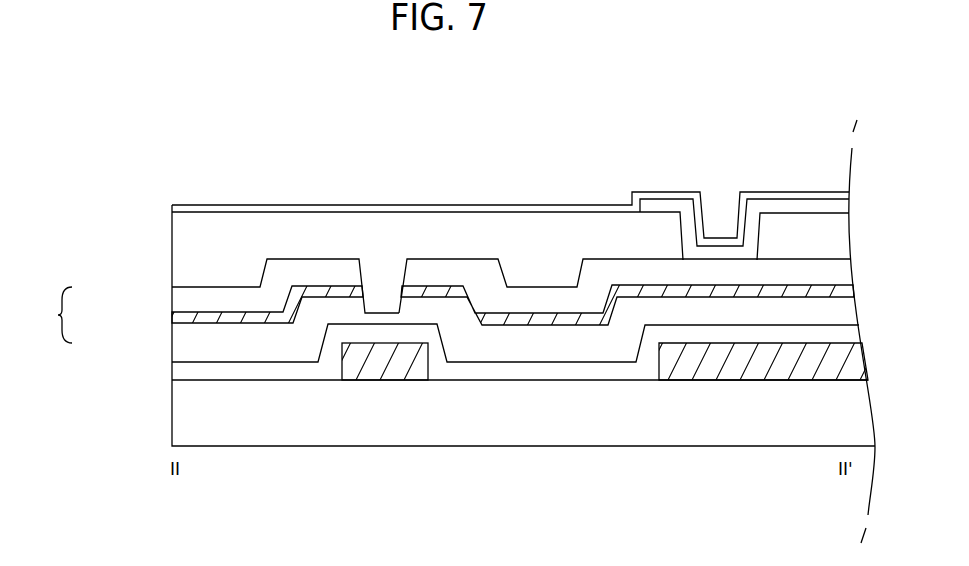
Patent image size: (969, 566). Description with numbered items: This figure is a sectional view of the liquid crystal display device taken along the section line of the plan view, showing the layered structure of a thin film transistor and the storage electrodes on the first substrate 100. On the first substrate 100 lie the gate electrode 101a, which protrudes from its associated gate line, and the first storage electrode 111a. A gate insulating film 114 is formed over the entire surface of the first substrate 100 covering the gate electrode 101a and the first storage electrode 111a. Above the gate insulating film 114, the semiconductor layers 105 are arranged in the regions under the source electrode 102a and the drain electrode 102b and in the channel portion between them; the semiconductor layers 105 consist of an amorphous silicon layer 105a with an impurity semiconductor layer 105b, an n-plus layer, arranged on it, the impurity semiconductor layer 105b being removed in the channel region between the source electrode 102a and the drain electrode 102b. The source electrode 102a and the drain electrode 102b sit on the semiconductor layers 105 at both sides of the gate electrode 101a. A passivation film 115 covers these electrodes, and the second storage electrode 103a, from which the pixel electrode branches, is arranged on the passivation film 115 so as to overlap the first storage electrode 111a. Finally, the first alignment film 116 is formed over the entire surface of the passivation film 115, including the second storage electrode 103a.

The first substrate 100 is at (182, 428).
The gate electrode 101a is at (387, 372).
The first storage electrode 111a is at (755, 370).
The gate insulating film 114 is at (182, 372).
The semiconductor layers 105 is at (46, 315).
The amorphous silicon layer 105a is at (182, 343).
The impurity semiconductor layer 105b is at (180, 316).
The source electrode 102a is at (243, 298).
The drain electrode 102b is at (467, 277).
The passivation film 115 is at (183, 247).
The second storage electrode 103a is at (782, 206).
The first alignment film 116 is at (173, 207).